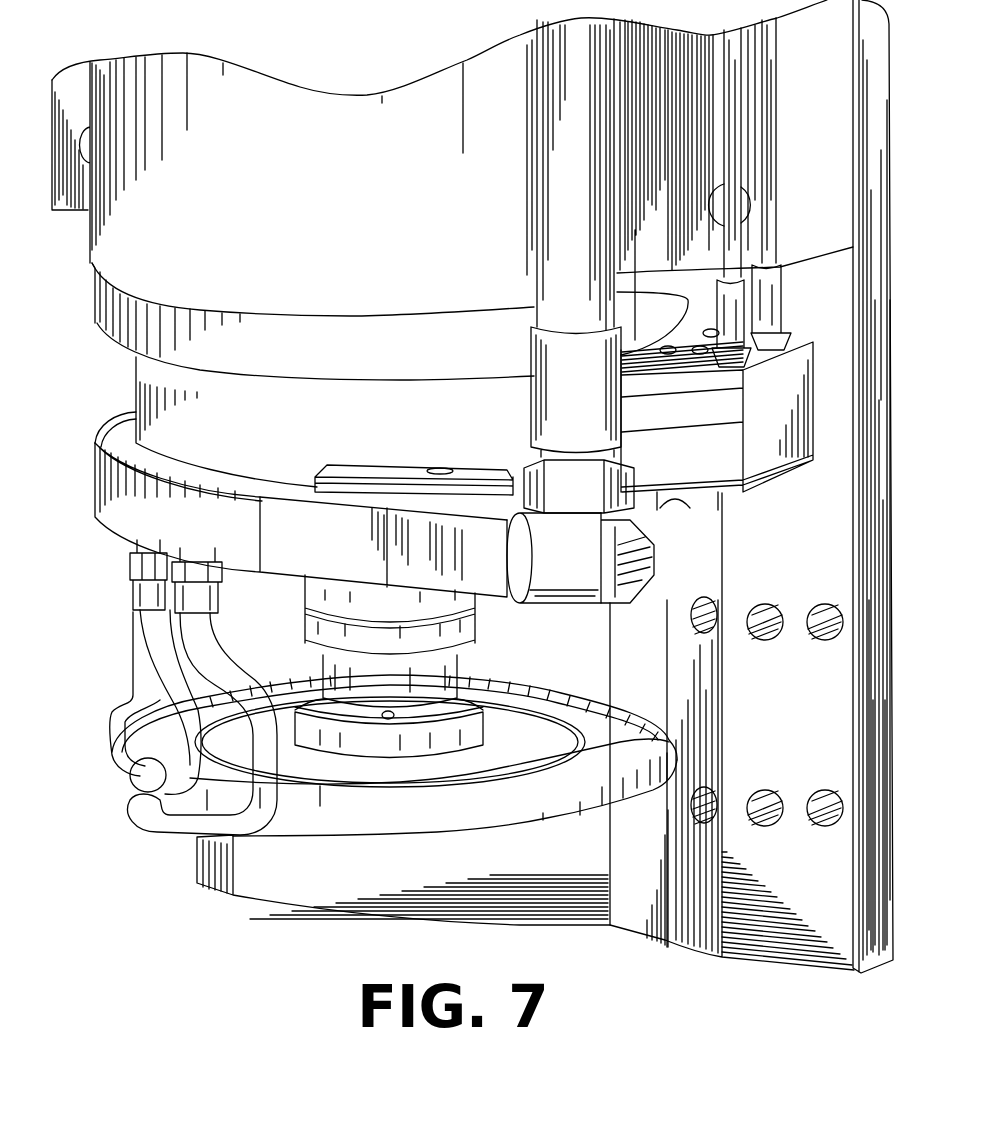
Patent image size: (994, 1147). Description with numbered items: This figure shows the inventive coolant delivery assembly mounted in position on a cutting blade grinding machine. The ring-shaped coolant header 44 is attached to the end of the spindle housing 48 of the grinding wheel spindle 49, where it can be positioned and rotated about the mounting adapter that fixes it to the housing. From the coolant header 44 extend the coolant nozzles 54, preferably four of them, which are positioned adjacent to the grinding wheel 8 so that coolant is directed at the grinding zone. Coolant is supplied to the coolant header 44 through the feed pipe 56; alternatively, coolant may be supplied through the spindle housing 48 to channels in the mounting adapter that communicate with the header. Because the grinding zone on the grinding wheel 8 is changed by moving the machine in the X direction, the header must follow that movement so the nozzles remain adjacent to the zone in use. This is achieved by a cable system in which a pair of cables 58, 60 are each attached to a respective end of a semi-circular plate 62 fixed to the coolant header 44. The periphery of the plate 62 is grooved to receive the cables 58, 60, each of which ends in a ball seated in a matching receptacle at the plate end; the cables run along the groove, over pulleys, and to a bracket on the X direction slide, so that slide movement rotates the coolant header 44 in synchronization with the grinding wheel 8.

The grinding wheel 8 is at (440, 818).
The coolant header 44 is at (95, 512).
The spindle housing 48 is at (328, 176).
The grinding wheel spindle 49 is at (478, 627).
The coolant nozzles 54 is at (245, 656).
The feed pipe 56 is at (557, 189).
The cable 58 is at (768, 100).
The cable 60 is at (734, 160).
The semi-circular plate 62 is at (372, 472).